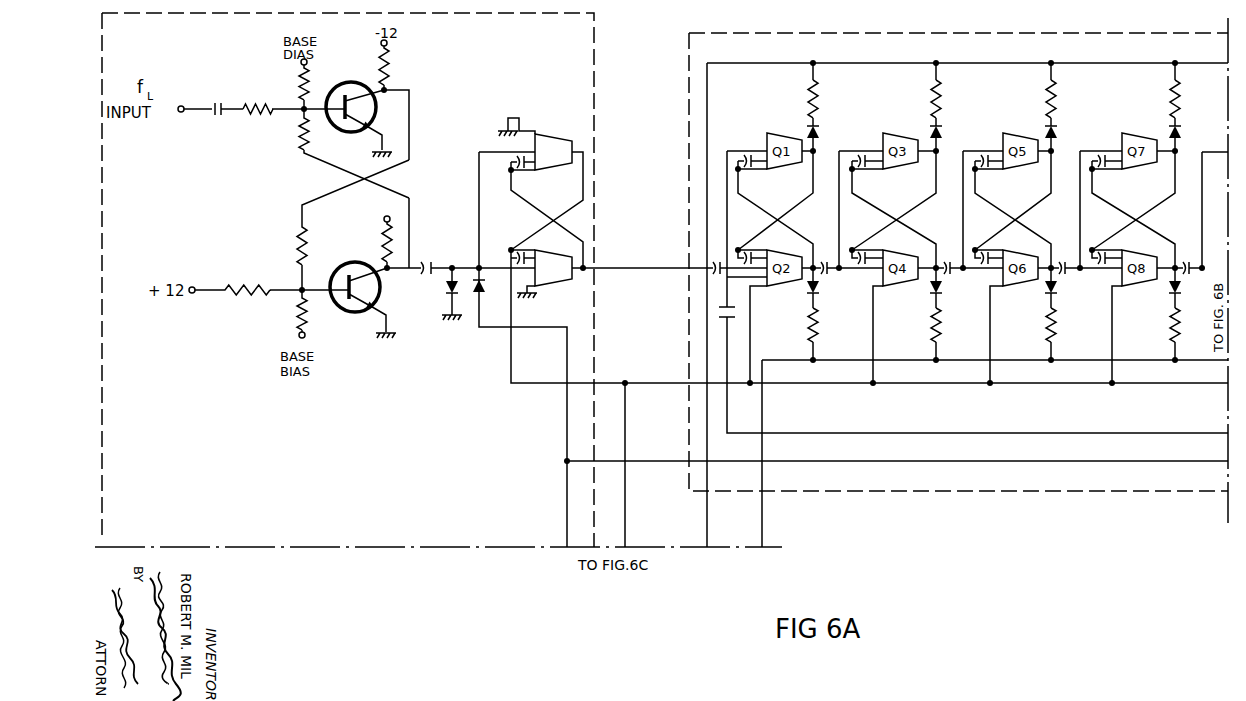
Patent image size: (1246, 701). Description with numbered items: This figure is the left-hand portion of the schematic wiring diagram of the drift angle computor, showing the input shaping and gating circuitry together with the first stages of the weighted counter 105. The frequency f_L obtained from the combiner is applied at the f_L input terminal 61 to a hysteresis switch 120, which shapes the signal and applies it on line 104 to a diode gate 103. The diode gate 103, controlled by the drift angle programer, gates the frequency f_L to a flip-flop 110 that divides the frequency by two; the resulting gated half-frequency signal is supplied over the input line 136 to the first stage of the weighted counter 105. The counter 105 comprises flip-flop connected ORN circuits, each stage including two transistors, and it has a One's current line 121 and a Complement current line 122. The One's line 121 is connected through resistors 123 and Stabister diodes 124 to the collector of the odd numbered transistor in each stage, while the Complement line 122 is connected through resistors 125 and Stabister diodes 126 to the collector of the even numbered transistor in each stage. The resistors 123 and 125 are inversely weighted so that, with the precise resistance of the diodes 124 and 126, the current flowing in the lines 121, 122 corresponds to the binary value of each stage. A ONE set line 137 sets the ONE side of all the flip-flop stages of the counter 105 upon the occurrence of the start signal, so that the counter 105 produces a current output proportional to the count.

The f_L input terminal 61 is at (181, 113).
The hysteresis switch 120 is at (357, 248).
The flip-flop 110 is at (564, 199).
The line 104 is at (442, 264).
The diode gate 103 is at (486, 276).
The input line 136 is at (655, 266).
The weighted counter 105 is at (689, 97).
The One's current line 121 is at (770, 64).
The Complement current line 122 is at (795, 358).
The resistor 123 is at (943, 100).
The Stabister diode 124 is at (943, 131).
The resistor 125 is at (820, 337).
The Stabister diode 126 is at (820, 291).
The ONE set line 137 is at (803, 383).